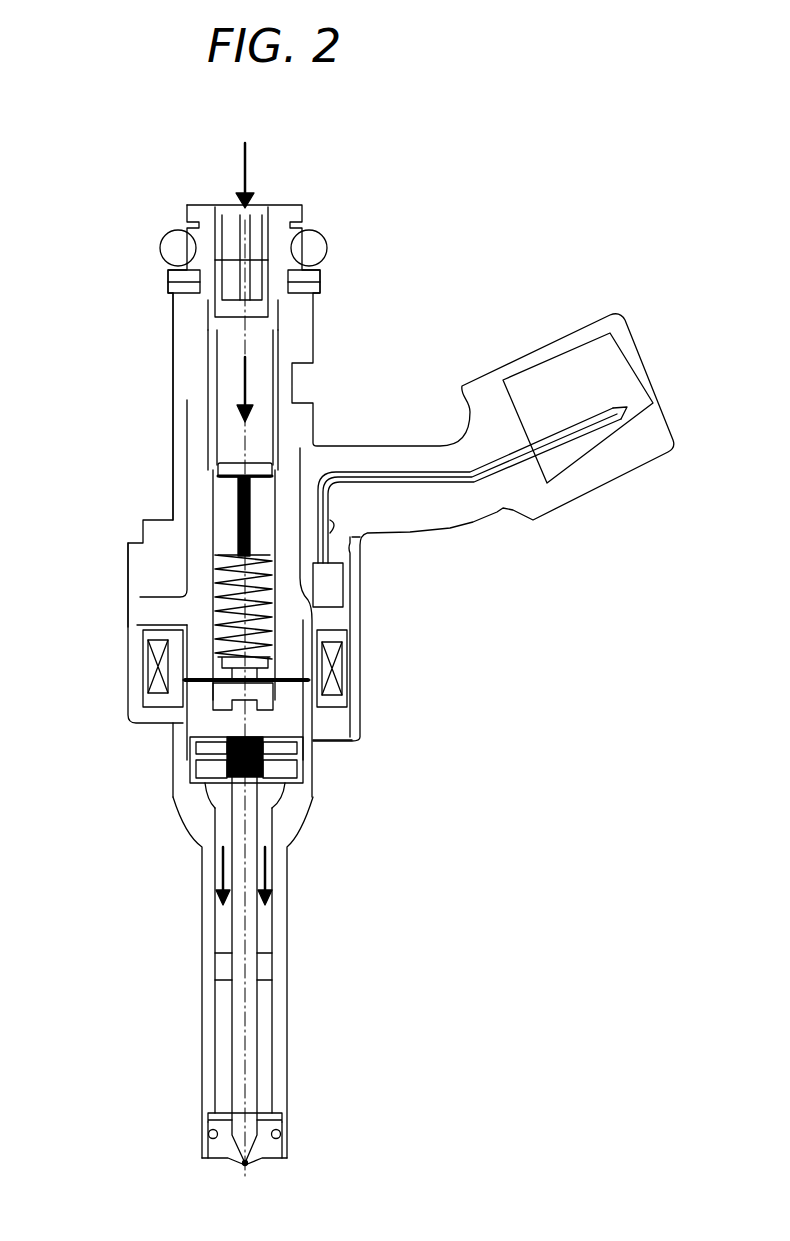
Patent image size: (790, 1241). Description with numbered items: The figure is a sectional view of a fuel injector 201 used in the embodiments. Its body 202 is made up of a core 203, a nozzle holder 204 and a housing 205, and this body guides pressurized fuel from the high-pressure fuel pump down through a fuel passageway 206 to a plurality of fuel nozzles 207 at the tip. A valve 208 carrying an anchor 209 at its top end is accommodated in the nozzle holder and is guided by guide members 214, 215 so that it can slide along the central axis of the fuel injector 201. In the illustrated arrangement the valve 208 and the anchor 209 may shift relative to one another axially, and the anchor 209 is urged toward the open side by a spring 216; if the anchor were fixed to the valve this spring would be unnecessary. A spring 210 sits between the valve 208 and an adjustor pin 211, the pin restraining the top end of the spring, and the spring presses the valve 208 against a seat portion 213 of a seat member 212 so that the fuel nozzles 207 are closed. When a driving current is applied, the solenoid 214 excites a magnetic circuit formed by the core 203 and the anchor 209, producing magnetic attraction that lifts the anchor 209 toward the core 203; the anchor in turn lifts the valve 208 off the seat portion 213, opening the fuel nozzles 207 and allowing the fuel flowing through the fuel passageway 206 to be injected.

The fuel injector 201 is at (383, 1059).
The body 202 is at (296, 990).
The core 203 is at (156, 612).
The nozzle holder 204 is at (280, 916).
The housing 205 is at (357, 718).
The fuel passageway 206 is at (255, 392).
The fuel nozzles 207 is at (251, 1160).
The valve 208 is at (247, 992).
The anchor 209 is at (192, 723).
The spring 210 is at (252, 604).
The adjustor pin 211 is at (242, 486).
The seat member 212 is at (212, 1141).
The seat portion 213 is at (236, 1160).
The solenoid 214 is at (333, 690).
The guide member 215 is at (225, 1129).
The spring 216 is at (257, 749).